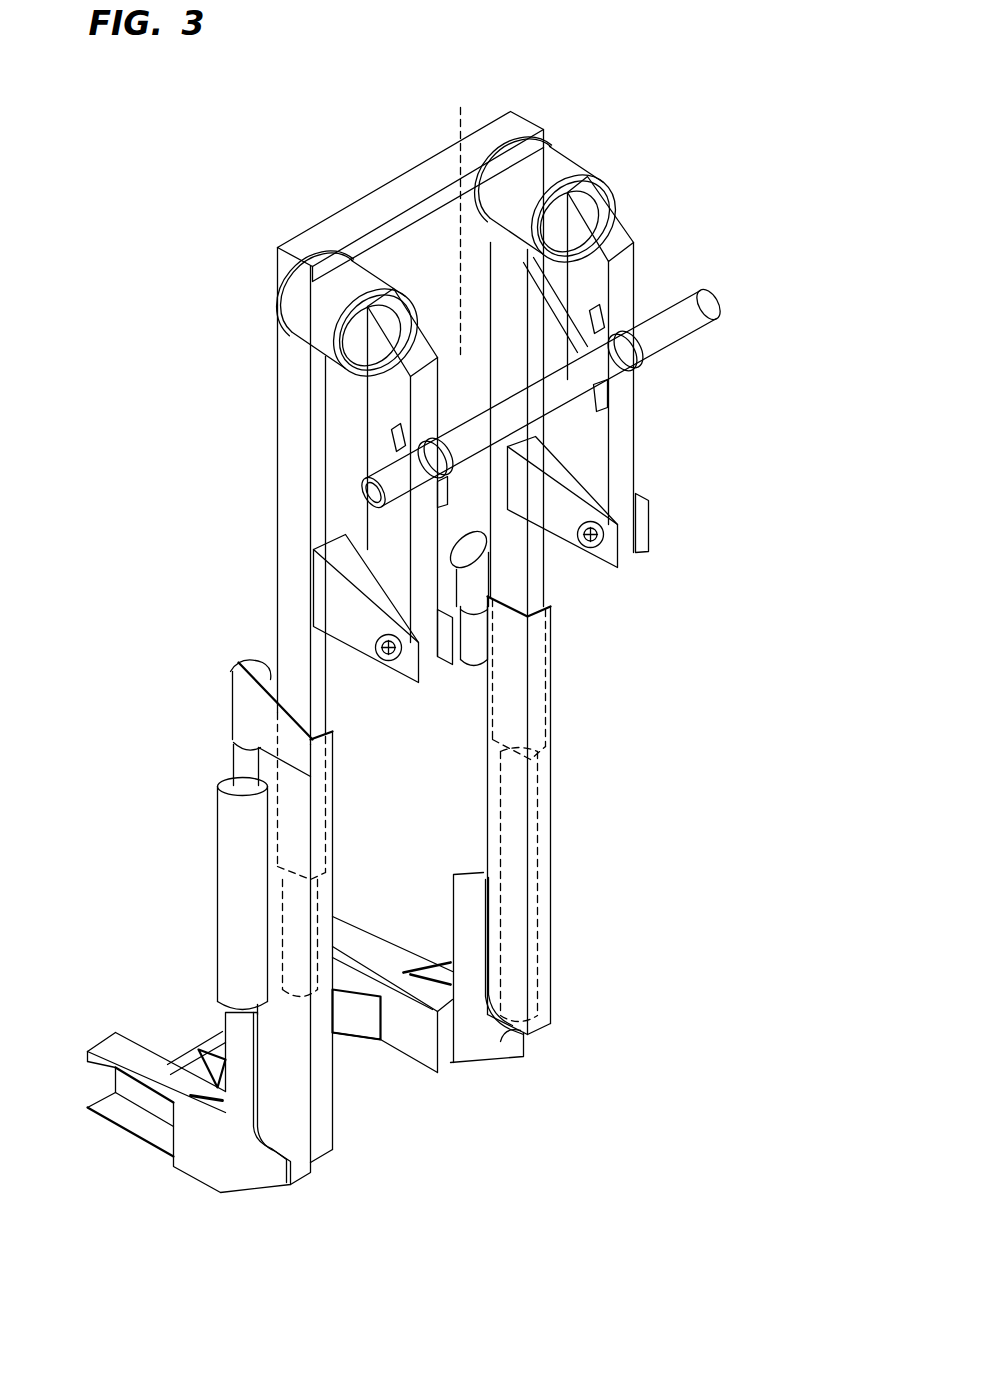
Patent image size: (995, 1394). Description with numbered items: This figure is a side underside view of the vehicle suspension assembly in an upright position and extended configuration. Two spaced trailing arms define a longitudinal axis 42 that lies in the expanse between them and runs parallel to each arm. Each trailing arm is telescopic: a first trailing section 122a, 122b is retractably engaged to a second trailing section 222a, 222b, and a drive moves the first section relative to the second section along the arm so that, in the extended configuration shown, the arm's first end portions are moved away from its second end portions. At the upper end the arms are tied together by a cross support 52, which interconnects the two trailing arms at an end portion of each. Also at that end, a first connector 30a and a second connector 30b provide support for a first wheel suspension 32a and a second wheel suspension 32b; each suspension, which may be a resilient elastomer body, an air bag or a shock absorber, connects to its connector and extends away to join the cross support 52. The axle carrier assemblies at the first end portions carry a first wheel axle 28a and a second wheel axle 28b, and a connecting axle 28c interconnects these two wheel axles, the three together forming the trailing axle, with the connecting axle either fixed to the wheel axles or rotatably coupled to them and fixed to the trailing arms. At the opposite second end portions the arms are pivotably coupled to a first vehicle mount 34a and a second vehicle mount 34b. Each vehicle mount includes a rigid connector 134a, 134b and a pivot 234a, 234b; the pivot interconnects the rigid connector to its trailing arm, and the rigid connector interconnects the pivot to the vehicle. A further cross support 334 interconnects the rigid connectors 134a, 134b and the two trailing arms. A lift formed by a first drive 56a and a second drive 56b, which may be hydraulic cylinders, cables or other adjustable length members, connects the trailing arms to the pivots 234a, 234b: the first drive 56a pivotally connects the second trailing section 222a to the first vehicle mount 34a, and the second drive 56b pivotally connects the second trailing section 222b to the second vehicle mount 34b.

The longitudinal axis 42 is at (443, 153).
The cross support 52 is at (347, 225).
The first wheel suspension 32a is at (330, 292).
The second wheel suspension 32b is at (540, 170).
The first connector 30a is at (355, 350).
The second connector 30b is at (560, 237).
The first trailing section 122a is at (277, 478).
The first trailing section 122b is at (620, 246).
The first wheel axle 28a is at (360, 495).
The second wheel axle 28b is at (722, 298).
The connecting axle 28c is at (567, 387).
The second trailing section 222a is at (292, 825).
The second trailing section 222b is at (555, 905).
The first drive 56a is at (240, 885).
The second drive 56b is at (470, 735).
The rigid connector 134a is at (103, 1050).
The rigid connector 134b is at (380, 930).
The cross support 334 is at (197, 1040).
The pivot 234a is at (253, 1167).
The pivot 234b is at (500, 1040).
The first vehicle mount 34a is at (106, 1148).
The second vehicle mount 34b is at (496, 1084).